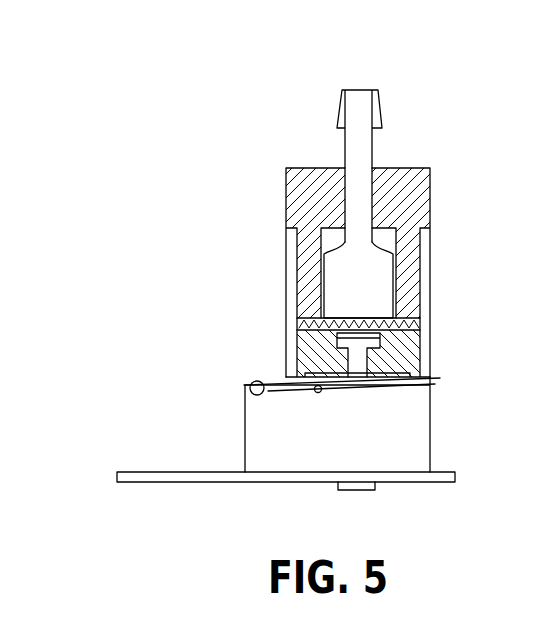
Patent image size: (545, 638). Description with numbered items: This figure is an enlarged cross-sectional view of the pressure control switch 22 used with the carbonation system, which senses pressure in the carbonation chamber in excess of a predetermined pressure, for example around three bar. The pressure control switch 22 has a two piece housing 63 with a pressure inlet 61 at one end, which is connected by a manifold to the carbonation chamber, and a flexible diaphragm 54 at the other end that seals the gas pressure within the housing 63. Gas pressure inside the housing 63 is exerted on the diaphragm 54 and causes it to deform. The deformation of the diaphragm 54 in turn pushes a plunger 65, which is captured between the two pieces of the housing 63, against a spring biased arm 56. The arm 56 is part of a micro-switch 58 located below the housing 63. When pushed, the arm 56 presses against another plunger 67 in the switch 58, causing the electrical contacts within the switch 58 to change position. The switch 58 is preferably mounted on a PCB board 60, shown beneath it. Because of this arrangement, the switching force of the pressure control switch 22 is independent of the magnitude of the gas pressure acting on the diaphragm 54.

The pressure control switch 22 is at (264, 149).
The pressure inlet 61 is at (370, 106).
The two piece housing 63 is at (405, 186).
The flexible diaphragm 54 is at (413, 328).
The plunger 65 is at (353, 356).
The spring biased arm 56 is at (440, 378).
The plunger 67 is at (318, 392).
The micro-switch 58 is at (405, 444).
The PCB board 60 is at (157, 478).